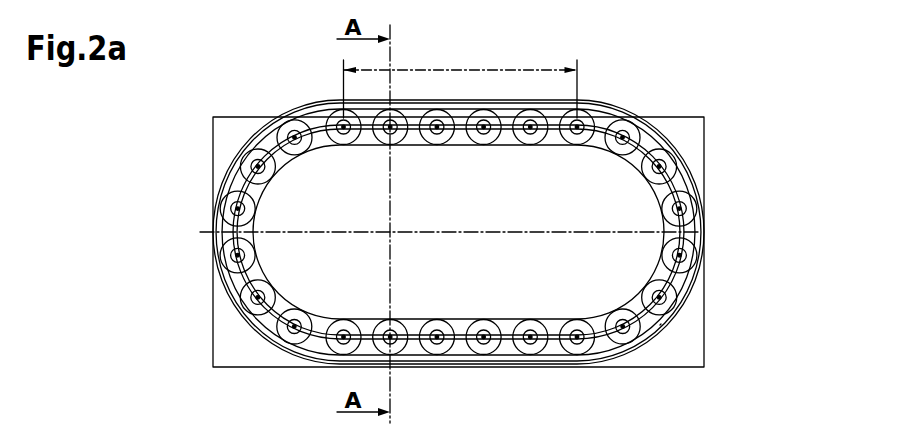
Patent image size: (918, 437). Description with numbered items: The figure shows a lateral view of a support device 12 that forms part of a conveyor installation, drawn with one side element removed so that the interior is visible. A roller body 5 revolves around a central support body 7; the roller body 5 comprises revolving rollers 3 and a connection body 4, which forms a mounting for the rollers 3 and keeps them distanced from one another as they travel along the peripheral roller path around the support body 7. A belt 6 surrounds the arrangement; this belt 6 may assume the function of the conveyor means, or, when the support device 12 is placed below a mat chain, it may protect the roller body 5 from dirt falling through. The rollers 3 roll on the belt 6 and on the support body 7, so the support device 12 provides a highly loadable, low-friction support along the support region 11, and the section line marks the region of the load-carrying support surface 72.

The rollers 3 is at (692, 207).
The connection body 4 is at (673, 277).
The roller body 5 is at (688, 146).
The belt 6 is at (661, 325).
The support body 7 is at (453, 203).
The support region 11 is at (436, 70).
The support device 12 is at (204, 157).
The load-carrying support surface 72 is at (599, 110).